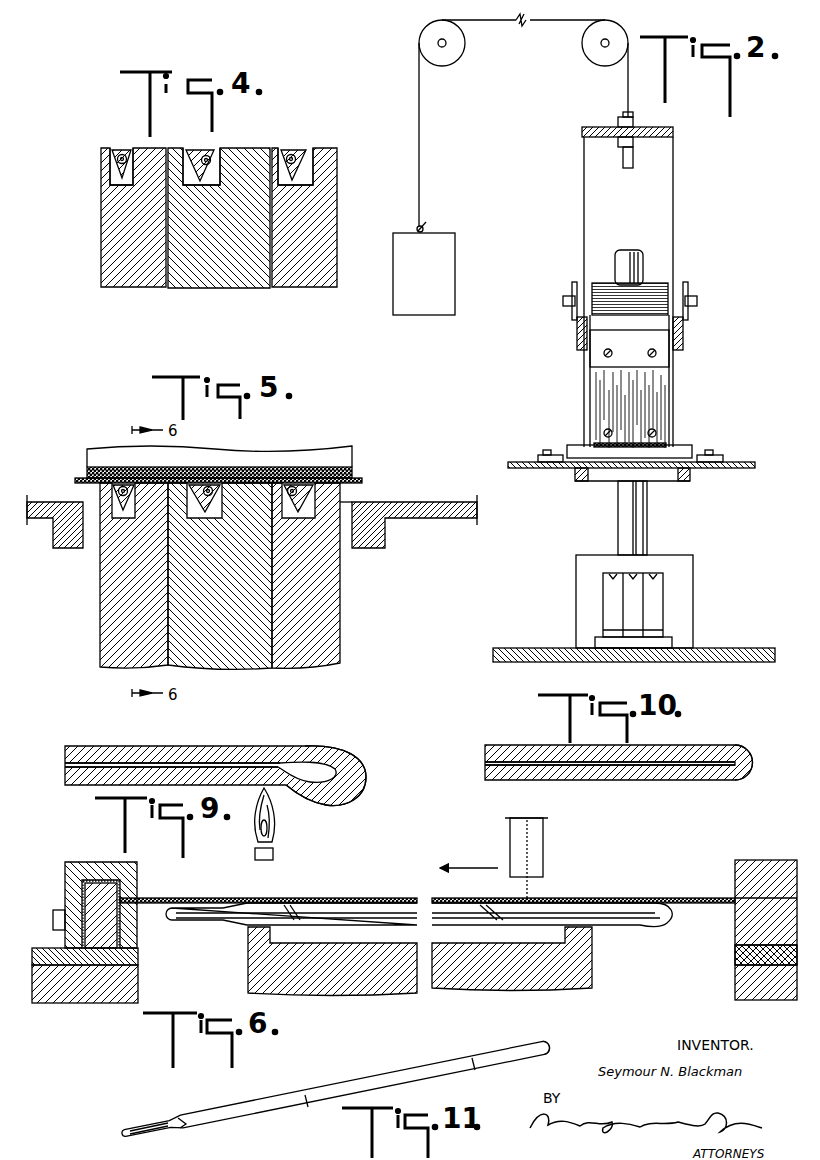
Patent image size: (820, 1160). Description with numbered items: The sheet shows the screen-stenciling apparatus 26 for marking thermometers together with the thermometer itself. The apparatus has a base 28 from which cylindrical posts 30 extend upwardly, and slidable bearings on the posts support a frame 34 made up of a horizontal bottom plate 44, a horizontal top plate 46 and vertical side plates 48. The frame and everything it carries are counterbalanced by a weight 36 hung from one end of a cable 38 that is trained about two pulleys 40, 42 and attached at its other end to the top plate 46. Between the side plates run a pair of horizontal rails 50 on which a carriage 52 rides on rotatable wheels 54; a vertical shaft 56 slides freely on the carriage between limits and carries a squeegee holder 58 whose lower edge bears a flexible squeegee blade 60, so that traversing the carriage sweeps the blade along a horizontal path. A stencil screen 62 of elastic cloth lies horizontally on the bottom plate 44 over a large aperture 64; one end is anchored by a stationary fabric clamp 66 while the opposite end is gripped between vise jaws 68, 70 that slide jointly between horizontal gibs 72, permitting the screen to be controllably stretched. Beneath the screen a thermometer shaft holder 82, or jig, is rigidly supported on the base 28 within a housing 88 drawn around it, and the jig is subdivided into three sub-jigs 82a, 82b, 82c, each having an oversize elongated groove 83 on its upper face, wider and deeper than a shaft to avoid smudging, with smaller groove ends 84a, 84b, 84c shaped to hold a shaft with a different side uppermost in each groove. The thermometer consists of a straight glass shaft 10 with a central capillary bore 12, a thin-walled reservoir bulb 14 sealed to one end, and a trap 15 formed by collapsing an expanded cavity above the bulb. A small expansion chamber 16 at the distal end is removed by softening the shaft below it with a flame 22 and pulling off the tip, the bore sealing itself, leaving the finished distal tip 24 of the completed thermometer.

In FIG. 9, the glass thermometer shaft 10 is at (92, 747).
In FIG. 10, the glass thermometer shaft 10 is at (510, 750).
In FIG. 4, the capillary bore 12 is at (125, 152).
In FIG. 9, the capillary bore 12 is at (152, 757).
In FIG. 10, the capillary bore 12 is at (633, 766).
In FIG. 6, the bulb 14 is at (202, 918).
In FIG. 11, the bulb 14 is at (140, 1128).
In FIG. 11, the trap 15 is at (185, 1126).
In FIG. 9, the expansion chamber 16 is at (318, 770).
In FIG. 9, the flame 22 is at (278, 836).
In FIG. 10, the finished distal tip 24 is at (753, 759).
In FIG. 11, the finished distal tip 24 is at (536, 1045).
In FIG. 2, the apparatus 26 is at (537, 538).
In FIG. 2, the base 28 is at (742, 648).
In FIG. 2, the cylindrical post 30 is at (646, 533).
In FIG. 2, the frame 34 is at (651, 279).
In FIG. 2, the weight 36 is at (398, 305).
In FIG. 2, the cable 38 is at (421, 183).
In FIG. 2, the pulley 40 is at (452, 60).
In FIG. 2, the pulley 42 is at (586, 56).
In FIG. 5, the bottom plate 44 is at (455, 503).
In FIG. 2, the bottom plate 44 is at (745, 462).
In FIG. 6, the bottom plate 44 is at (45, 948).
In FIG. 2, the top plate 46 is at (673, 133).
In FIG. 2, the side plate 48 is at (674, 222).
In FIG. 2, the horizontal rail 50 is at (577, 348).
In FIG. 2, the carriage 52 is at (610, 285).
In FIG. 2, the rotatable wheel 54 is at (686, 283).
In FIG. 2, the vertical shaft 56 is at (632, 256).
In FIG. 2, the squeegee holder 58 is at (605, 397).
In FIG. 5, the squeegee blade 60 is at (238, 466).
In FIG. 2, the squeegee blade 60 is at (636, 444).
In FIG. 5, the stencil screen 62 is at (272, 480).
In FIG. 6, the stencil screen 62 is at (693, 898).
In FIG. 5, the aperture 64 is at (352, 505).
In FIG. 2, the aperture 64 is at (673, 470).
In FIG. 6, the aperture 64 is at (138, 958).
In FIG. 6, the fabric clamp 66 is at (88, 865).
In FIG. 6, the vise jaw 68 is at (748, 860).
In FIG. 6, the vise jaw 70 is at (735, 936).
In FIG. 2, the horizontal gib 72 is at (720, 455).
In FIG. 4, the thermometer shaft holder 82 is at (196, 237).
In FIG. 5, the thermometer shaft holder 82 is at (97, 617).
In FIG. 2, the thermometer shaft holder 82 is at (598, 597).
In FIG. 4, the sub-jig 82a is at (101, 226).
In FIG. 4, the sub-jig 82b is at (228, 272).
In FIG. 4, the sub-jig 82c is at (318, 272).
In FIG. 4, the oversize elongated groove 83 is at (218, 160).
In FIG. 4, the groove end 84a is at (93, 156).
In FIG. 4, the groove end 84b is at (210, 172).
In FIG. 4, the groove end 84c is at (300, 178).
In FIG. 2, the housing 88 is at (693, 566).